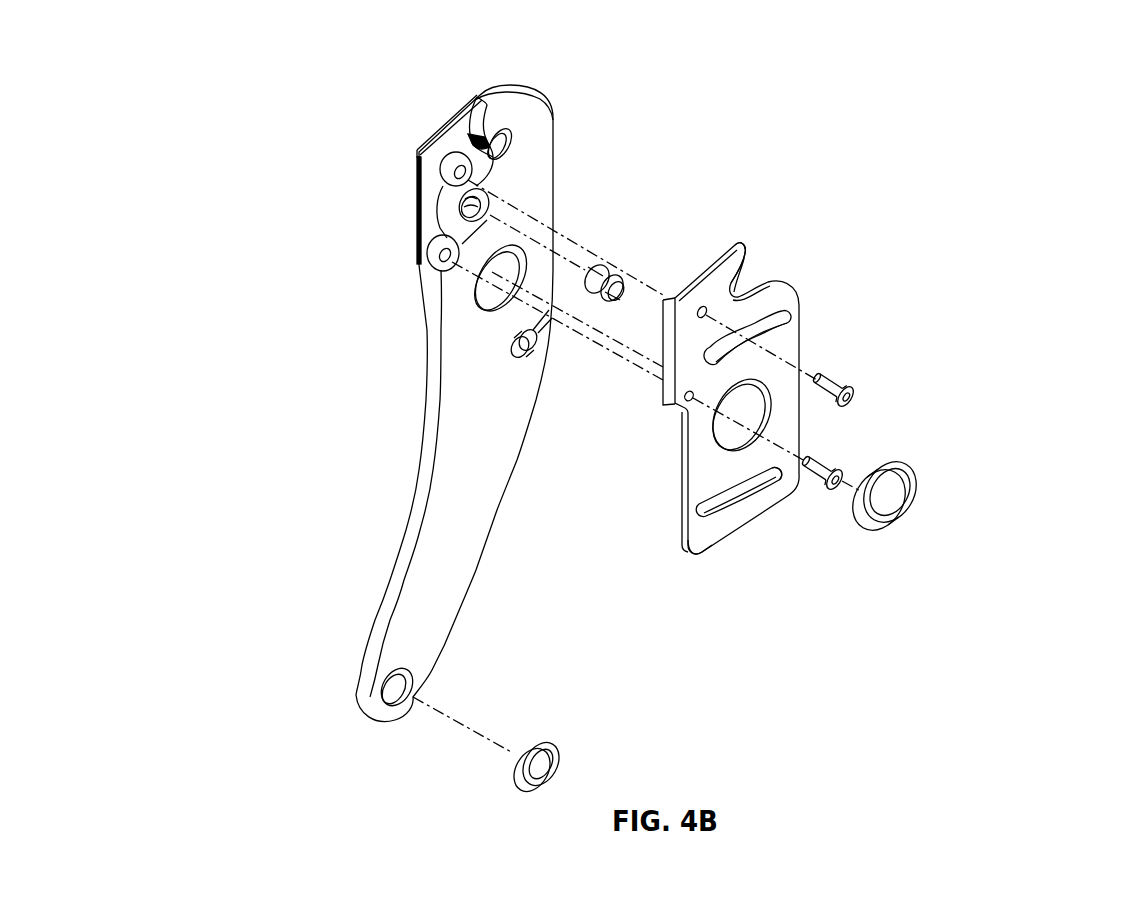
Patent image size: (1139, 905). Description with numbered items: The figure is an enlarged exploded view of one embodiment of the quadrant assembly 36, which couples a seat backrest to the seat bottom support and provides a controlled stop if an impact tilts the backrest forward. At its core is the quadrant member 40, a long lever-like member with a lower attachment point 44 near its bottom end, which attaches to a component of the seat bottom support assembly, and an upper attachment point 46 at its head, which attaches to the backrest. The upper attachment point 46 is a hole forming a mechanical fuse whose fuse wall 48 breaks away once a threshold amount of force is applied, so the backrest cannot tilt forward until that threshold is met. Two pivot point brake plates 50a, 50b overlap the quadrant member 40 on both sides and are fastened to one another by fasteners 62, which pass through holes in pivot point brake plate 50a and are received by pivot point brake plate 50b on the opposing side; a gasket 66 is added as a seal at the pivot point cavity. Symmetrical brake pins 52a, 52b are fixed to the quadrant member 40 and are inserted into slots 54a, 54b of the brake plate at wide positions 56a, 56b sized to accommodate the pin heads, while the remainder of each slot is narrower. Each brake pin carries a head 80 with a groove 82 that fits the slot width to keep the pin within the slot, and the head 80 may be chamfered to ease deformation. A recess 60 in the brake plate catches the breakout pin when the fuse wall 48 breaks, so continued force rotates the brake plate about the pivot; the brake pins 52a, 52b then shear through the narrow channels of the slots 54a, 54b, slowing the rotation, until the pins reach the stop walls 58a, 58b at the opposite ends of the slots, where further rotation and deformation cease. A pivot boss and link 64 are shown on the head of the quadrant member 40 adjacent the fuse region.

The quadrant assembly 36 is at (300, 120).
The quadrant member 40 is at (426, 503).
The lower attachment point 44 is at (393, 682).
The upper attachment point 46 is at (510, 135).
The fuse wall 48 is at (465, 137).
The pivot point brake plate 50a is at (715, 547).
The pivot point brake plate 50b is at (420, 137).
The brake pin 52a is at (613, 284).
The brake pin 52b is at (508, 350).
The slot 54a is at (758, 318).
The slot 54b is at (697, 522).
The position 56a is at (770, 485).
The position 56b is at (686, 400).
The stop wall 58a is at (792, 318).
The stop wall 58b is at (690, 510).
The recess 60 is at (740, 293).
The fasteners 62 is at (827, 378).
The pivot boss 64 is at (440, 167).
The gasket 66 is at (915, 479).
The head 80 is at (620, 278).
The groove 82 is at (610, 262).